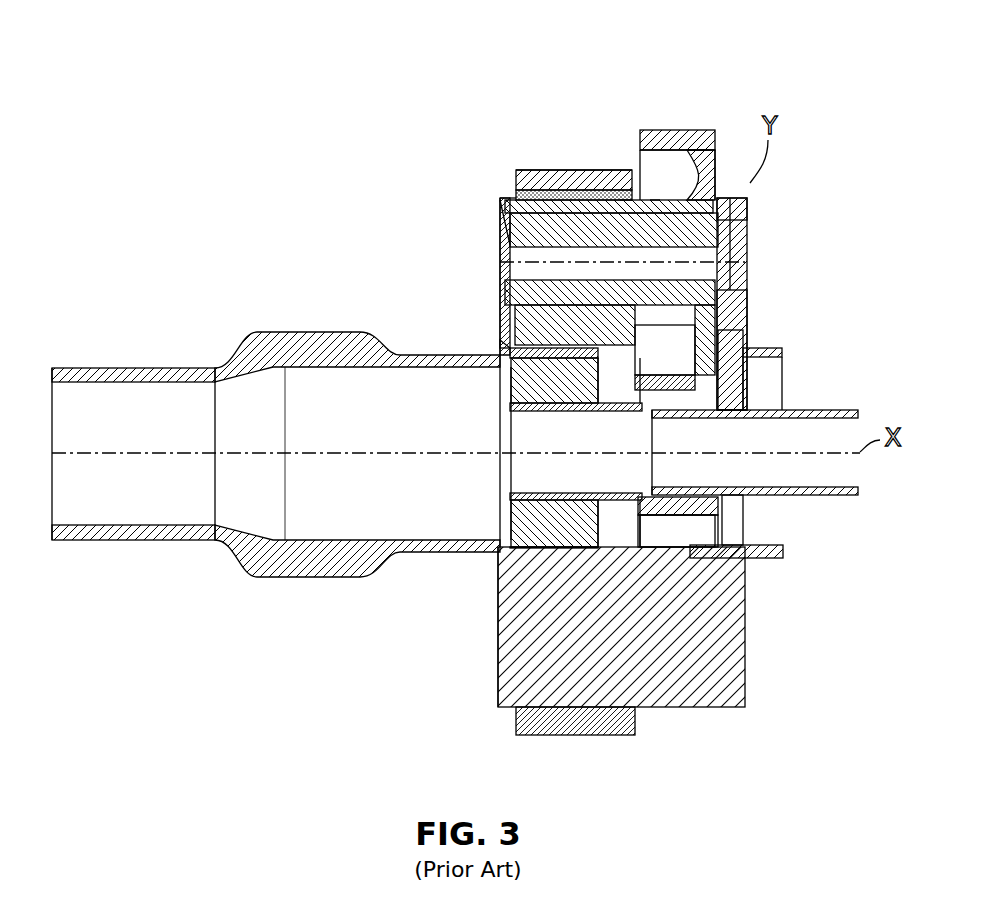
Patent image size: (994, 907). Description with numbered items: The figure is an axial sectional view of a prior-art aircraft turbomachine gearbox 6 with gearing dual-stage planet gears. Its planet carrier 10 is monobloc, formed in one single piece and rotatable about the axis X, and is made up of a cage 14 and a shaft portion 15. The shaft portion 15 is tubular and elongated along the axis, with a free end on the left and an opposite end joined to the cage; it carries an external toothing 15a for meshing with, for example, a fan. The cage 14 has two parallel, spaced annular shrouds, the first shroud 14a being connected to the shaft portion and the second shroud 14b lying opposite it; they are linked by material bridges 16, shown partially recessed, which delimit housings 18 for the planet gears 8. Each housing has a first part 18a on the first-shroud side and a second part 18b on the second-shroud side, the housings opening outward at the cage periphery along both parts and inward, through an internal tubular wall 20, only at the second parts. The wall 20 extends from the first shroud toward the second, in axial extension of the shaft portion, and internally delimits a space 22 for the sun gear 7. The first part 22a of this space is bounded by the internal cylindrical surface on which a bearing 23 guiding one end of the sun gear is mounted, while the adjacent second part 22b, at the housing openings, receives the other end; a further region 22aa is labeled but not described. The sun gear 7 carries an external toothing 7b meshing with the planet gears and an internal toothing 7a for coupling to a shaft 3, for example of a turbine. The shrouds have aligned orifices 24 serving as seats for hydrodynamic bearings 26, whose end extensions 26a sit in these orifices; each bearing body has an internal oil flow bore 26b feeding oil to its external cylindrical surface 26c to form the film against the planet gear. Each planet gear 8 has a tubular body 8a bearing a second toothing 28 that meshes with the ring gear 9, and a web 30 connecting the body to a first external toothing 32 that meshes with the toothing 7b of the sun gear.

The shaft 3 is at (810, 490).
The gearbox 6 is at (770, 88).
The sun gear 7 is at (722, 520).
The internal toothing 7a is at (700, 420).
The external toothing 7b is at (712, 503).
The planet gears 8 is at (690, 126).
The tubular body 8a is at (500, 197).
The ring gear 9 is at (545, 170).
The planet carrier 10 is at (754, 199).
The cage 14 is at (740, 707).
The first shroud 14a is at (500, 212).
The second shroud 14b is at (748, 310).
The shaft portion 15 is at (162, 545).
The external toothing 15a is at (330, 578).
The material bridges 16 is at (650, 708).
The housings 18 is at (593, 170).
The first part 18a is at (510, 200).
The second part 18b is at (735, 268).
The internal tubular wall 20 is at (590, 342).
The space 22 is at (467, 552).
The first part 22a is at (521, 421).
The hub shoulder 22aa is at (500, 372).
The second part 22b is at (680, 530).
The bearing 23 is at (498, 705).
The orifices 24 is at (498, 243).
The hydrodynamic bearings 26 is at (728, 210).
The extensions 26a is at (498, 277).
The internal oil flow bore 26b is at (656, 200).
The external cylindrical surface 26c is at (625, 200).
The second toothing 28 is at (568, 170).
The web 30 is at (715, 128).
The first external toothing 32 is at (707, 130).